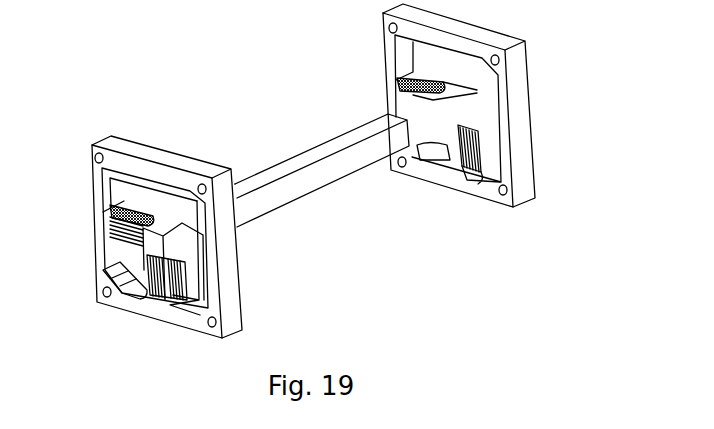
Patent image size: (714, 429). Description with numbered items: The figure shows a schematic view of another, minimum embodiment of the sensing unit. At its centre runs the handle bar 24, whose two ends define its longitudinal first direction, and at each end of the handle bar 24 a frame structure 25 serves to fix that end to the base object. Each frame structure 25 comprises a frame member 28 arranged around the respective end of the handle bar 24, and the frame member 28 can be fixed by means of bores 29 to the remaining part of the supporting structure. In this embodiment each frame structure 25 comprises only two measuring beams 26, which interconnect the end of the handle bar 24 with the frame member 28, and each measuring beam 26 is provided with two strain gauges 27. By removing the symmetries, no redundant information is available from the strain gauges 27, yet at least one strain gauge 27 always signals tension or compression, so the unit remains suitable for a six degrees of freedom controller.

The handle bar 24 is at (322, 175).
The frame structure 25 is at (142, 124).
The measuring beam 26 is at (143, 236).
The strain gauge 27 is at (107, 250).
The frame member 28 is at (228, 282).
The bore 29 is at (90, 151).